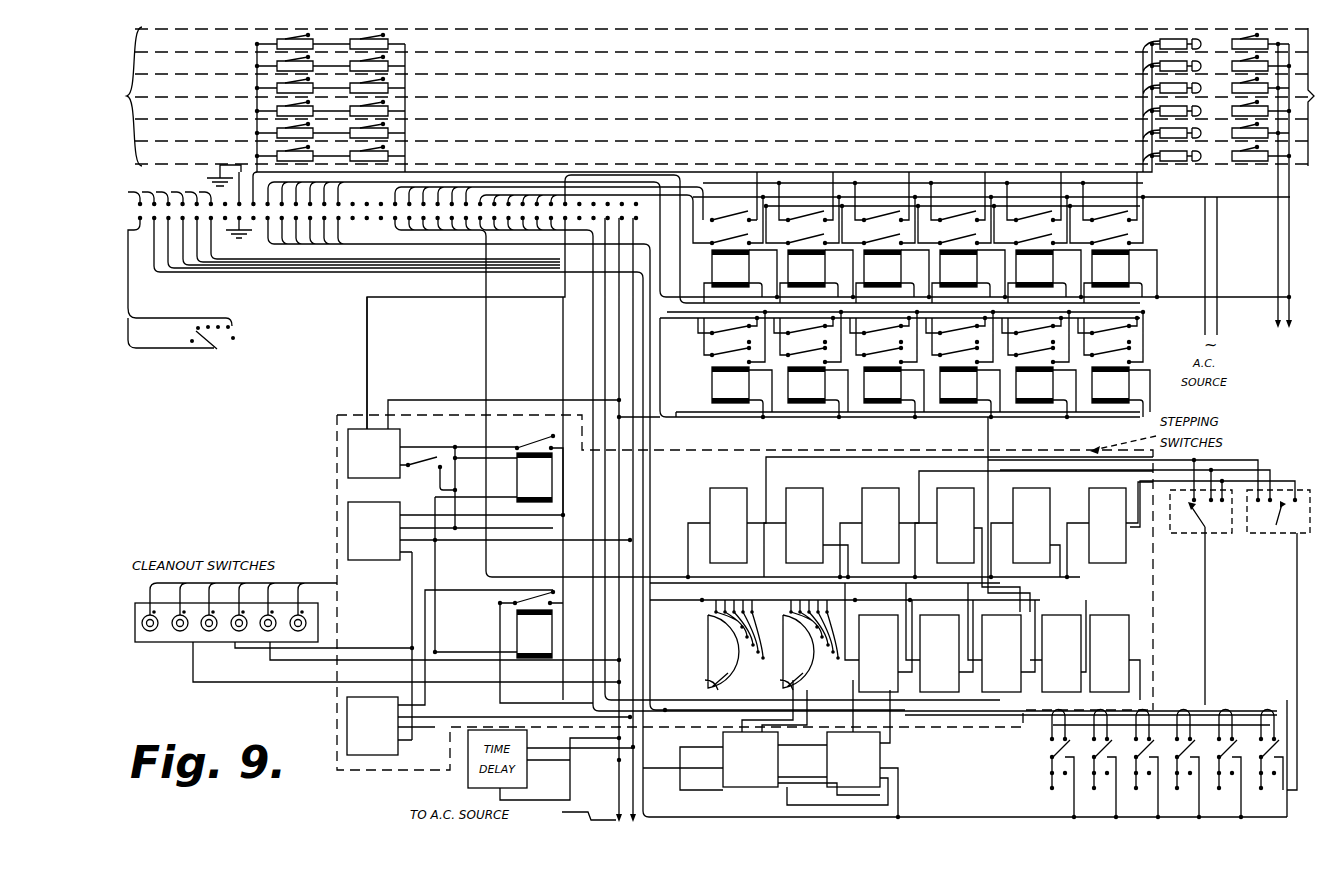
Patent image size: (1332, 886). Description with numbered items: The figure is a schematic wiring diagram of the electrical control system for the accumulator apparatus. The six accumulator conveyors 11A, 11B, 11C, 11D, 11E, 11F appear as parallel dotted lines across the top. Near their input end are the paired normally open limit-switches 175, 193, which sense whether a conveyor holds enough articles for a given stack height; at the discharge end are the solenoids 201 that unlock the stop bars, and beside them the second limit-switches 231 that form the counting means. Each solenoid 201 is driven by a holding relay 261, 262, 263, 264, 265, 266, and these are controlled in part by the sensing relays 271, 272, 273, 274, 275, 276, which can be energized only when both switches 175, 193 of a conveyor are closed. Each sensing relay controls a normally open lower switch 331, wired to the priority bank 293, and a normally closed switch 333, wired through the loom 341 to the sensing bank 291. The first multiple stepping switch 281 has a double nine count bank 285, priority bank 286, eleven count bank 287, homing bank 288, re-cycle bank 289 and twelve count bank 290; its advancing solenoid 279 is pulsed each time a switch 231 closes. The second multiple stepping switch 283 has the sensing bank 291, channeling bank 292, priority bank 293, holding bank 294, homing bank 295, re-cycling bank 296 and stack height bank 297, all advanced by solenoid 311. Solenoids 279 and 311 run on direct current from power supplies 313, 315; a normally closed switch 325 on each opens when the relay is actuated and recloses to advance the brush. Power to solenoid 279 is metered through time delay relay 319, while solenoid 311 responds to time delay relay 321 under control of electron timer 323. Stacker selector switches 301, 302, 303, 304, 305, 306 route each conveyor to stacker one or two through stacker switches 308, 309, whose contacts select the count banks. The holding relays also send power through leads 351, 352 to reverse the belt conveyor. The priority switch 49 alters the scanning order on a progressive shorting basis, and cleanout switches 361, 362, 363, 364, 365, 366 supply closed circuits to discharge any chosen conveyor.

The accumulator conveyor 11A is at (673, 41).
The accumulator conveyor 11B is at (713, 63).
The accumulator conveyor 11C is at (754, 86).
The accumulator conveyor 11D is at (794, 108).
The accumulator conveyor 11E is at (833, 130).
The accumulator conveyor 11F is at (873, 153).
The priority switch 49 is at (181, 307).
The limit-switch 175 is at (298, 150).
The limit-switch 193 is at (368, 157).
The solenoid 201 is at (1170, 155).
The second limit-switch 231 is at (1246, 170).
The holding relay 261 is at (741, 249).
The holding relay 262 is at (809, 237).
The holding relay 263 is at (885, 237).
The holding relay 264 is at (961, 237).
The holding relay 265 is at (1037, 237).
The holding relay 266 is at (1113, 237).
The sensing relay 271 is at (735, 364).
The sensing relay 272 is at (811, 364).
The sensing relay 273 is at (887, 364).
The sensing relay 274 is at (963, 364).
The sensing relay 275 is at (1039, 364).
The sensing relay 276 is at (1114, 363).
The advancing solenoid 279 is at (534, 477).
The multiple stepping switch 281 is at (919, 534).
The second multiple stepping switch 283 is at (941, 657).
The double nine count bank 285 is at (919, 518).
The priority bank 286 is at (807, 533).
The eleven count bank 287 is at (995, 525).
The homing bank 288 is at (966, 550).
The re-cycle bank 289 is at (1024, 533).
The twelve count bank 290 is at (1109, 530).
The sensing bank 291 is at (735, 649).
The channeling bank 292 is at (810, 649).
The priority bank 293 is at (827, 657).
The holding bank 294 is at (939, 637).
The homing bank 295 is at (1001, 637).
The re-cycling bank 296 is at (1058, 646).
The stack height bank 297 is at (1115, 657).
The stacker selector switch 301 is at (1096, 759).
The stacker selector switch 302 is at (1085, 765).
The stacker selector switch 303 is at (1127, 765).
The stacker selector switch 304 is at (1169, 765).
The stacker selector switch 305 is at (1211, 765).
The stacker selector switch 306 is at (1253, 765).
The stacker switch 308 is at (1186, 535).
The stacker switch 309 is at (1272, 535).
The solenoid 311 is at (540, 634).
The power supply 313 is at (322, 516).
The power supply 315 is at (326, 705).
The time delay relay 319 is at (483, 393).
The time delay relay 321 is at (761, 742).
The electron timer 323 is at (843, 749).
The normally closed switch 325 is at (546, 441).
The lower switch 331 is at (716, 345).
The second switch 333 is at (716, 332).
The loom 341 is at (668, 460).
The electrical lead 351 is at (1278, 318).
The electrical lead 352 is at (1289, 258).
The cleanout switch 361 is at (155, 633).
The cleanout switch 362 is at (185, 633).
The cleanout switch 363 is at (214, 633).
The cleanout switch 364 is at (243, 633).
The cleanout switch 365 is at (282, 633).
The cleanout switch 366 is at (253, 632).